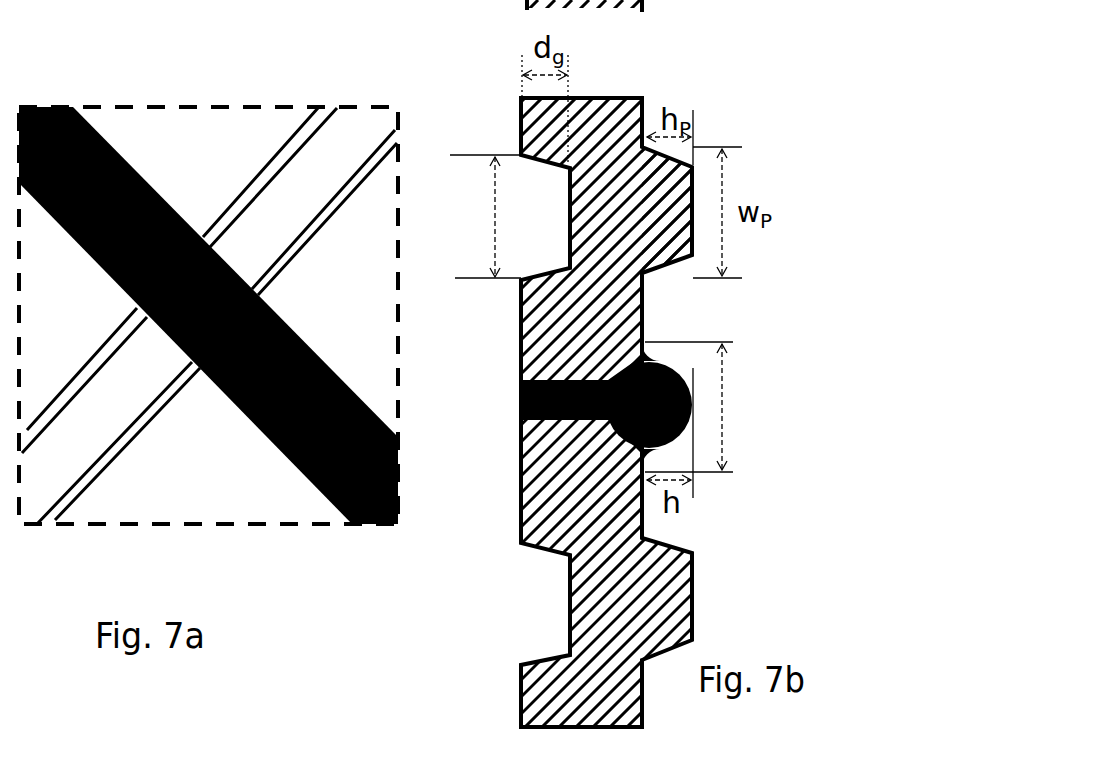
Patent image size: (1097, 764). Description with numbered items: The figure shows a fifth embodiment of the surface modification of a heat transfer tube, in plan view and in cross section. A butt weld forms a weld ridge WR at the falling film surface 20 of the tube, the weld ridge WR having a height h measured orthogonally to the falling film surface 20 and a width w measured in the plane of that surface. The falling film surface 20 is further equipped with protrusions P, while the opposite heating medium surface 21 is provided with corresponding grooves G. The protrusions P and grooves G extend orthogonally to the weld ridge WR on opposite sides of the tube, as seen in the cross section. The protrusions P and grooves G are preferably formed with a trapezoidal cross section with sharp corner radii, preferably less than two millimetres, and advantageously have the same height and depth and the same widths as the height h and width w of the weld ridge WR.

In FIG. 7a, the weld ridge WR is at (90, 115).
In FIG. 7b, the weld ridge WR is at (643, 358).
In FIG. 7a, the protrusion P is at (322, 160).
In FIG. 7b, the protrusion P is at (675, 227).
In FIG. 7b, the groove G is at (537, 593).
In FIG. 7b, the falling film surface 20 is at (645, 320).
In FIG. 7b, the heating medium surface 21 is at (521, 113).